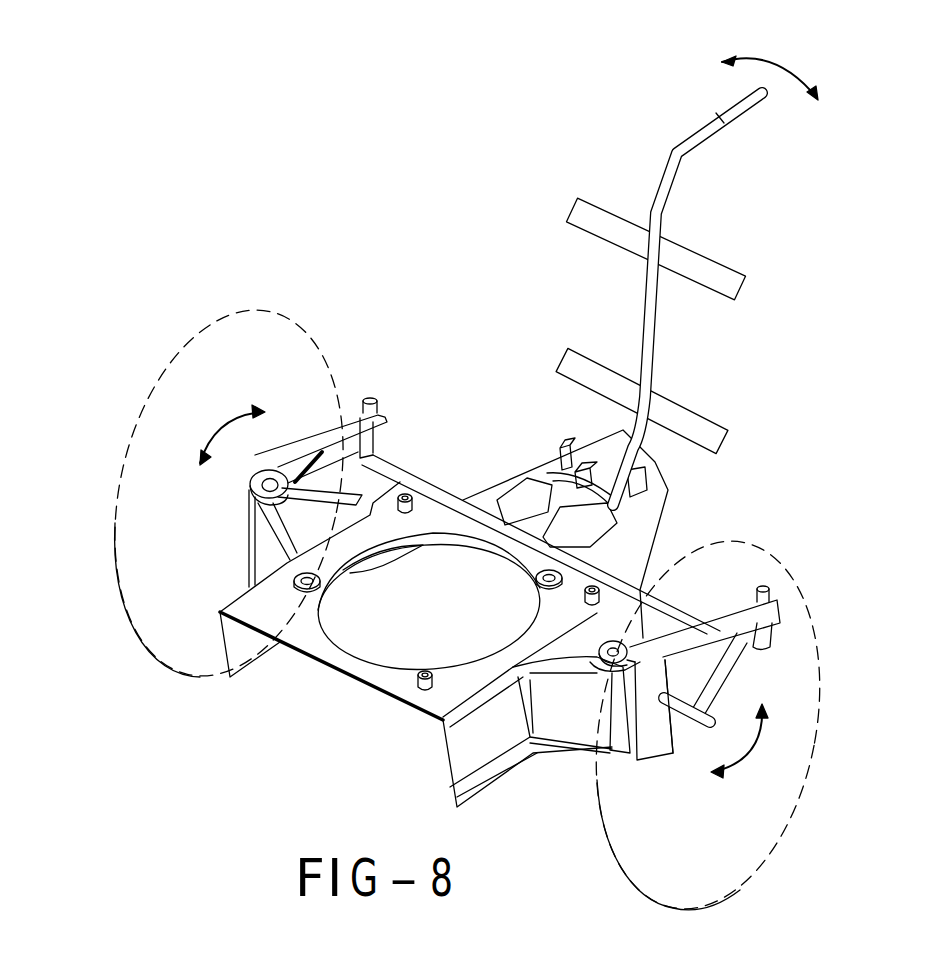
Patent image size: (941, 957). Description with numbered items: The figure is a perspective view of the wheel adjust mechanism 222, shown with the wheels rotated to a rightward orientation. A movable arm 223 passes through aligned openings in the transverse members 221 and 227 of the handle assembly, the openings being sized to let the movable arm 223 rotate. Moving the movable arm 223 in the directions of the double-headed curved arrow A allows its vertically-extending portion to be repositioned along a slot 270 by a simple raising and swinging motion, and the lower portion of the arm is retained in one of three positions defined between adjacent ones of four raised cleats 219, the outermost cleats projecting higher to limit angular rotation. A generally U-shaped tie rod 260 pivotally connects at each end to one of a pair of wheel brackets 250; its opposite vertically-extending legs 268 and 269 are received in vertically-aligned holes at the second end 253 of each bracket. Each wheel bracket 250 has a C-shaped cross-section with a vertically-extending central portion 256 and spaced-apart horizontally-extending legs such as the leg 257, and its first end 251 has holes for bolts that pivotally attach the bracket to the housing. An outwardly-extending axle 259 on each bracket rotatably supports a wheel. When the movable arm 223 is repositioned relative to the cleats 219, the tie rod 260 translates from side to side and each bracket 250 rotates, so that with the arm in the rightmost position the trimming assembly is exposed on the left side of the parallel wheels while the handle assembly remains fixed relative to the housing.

The double-headed curved arrow A is at (788, 66).
The raised cleats 219 is at (612, 470).
The transverse member 221 is at (700, 267).
The wheel adjust mechanism 222 is at (780, 497).
The movable arm 223 is at (682, 162).
The transverse member 227 is at (687, 418).
The wheel brackets 250 is at (343, 412).
The first end 251 is at (257, 470).
The second end 253 is at (352, 413).
The vertically-extending central portion 256 is at (665, 735).
The horizontally-extending leg 257 is at (735, 615).
The axle 259 is at (700, 723).
The tie rod 260 is at (643, 587).
The vertically-extending leg 268 is at (373, 440).
The vertically-extending leg 269 is at (768, 586).
The slot 270 is at (560, 477).